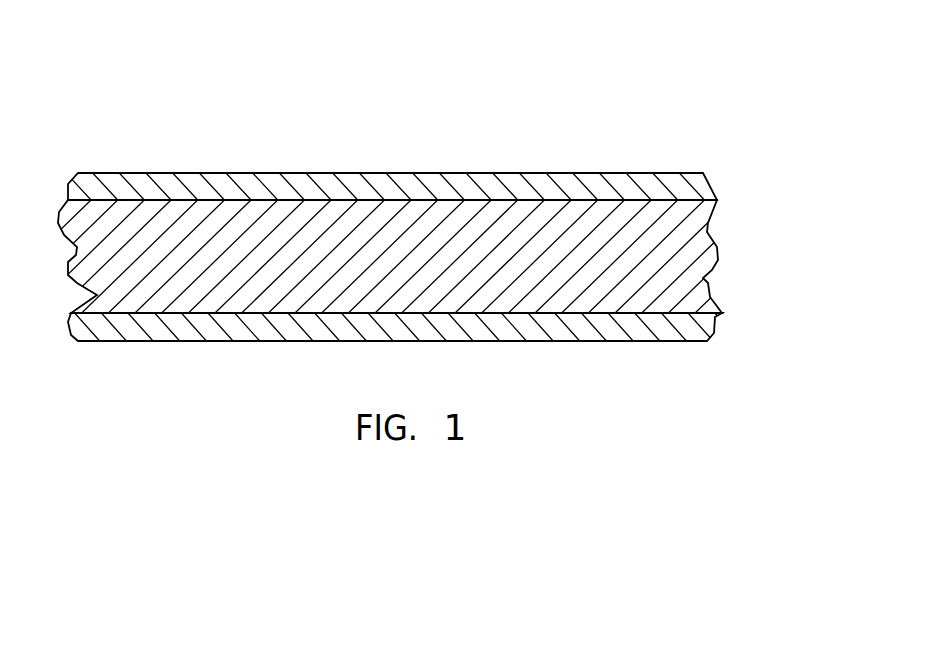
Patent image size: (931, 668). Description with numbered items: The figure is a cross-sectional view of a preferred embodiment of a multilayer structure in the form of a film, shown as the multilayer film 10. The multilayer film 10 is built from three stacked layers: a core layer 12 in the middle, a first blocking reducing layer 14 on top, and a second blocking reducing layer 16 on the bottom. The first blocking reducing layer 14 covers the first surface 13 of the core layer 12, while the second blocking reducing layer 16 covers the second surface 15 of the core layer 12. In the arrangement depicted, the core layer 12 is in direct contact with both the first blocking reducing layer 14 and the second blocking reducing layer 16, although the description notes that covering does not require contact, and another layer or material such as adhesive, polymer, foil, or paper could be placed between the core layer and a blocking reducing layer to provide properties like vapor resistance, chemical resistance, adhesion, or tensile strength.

The multilayer film 10 is at (436, 223).
The core layer 12 is at (655, 260).
The first surface 13 is at (497, 200).
The first blocking reducing layer 14 is at (688, 192).
The second surface 15 is at (575, 313).
The second blocking reducing layer 16 is at (660, 330).